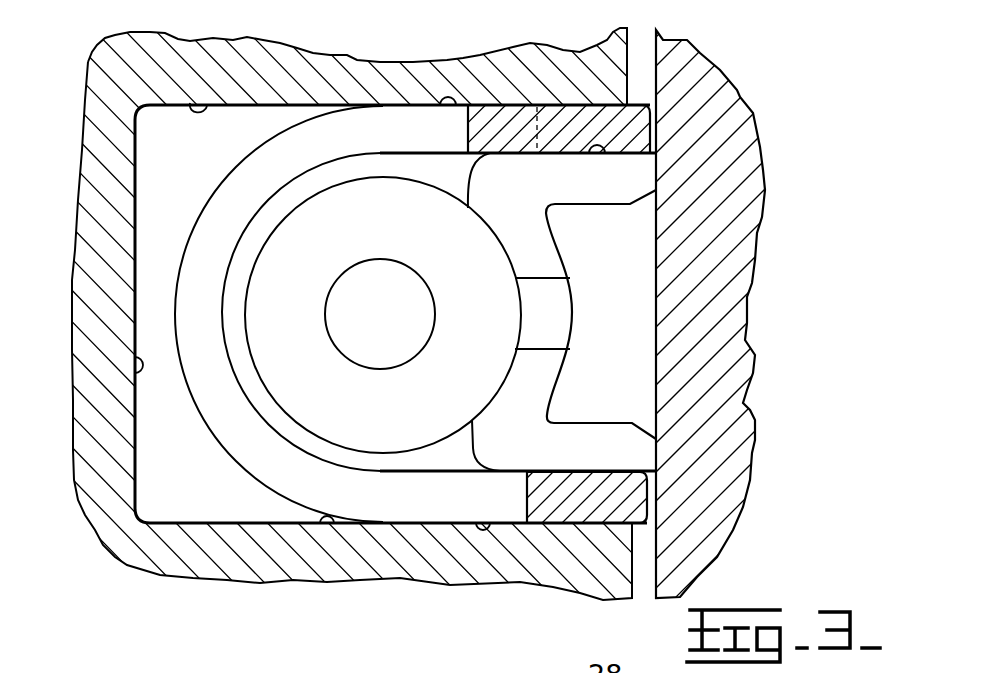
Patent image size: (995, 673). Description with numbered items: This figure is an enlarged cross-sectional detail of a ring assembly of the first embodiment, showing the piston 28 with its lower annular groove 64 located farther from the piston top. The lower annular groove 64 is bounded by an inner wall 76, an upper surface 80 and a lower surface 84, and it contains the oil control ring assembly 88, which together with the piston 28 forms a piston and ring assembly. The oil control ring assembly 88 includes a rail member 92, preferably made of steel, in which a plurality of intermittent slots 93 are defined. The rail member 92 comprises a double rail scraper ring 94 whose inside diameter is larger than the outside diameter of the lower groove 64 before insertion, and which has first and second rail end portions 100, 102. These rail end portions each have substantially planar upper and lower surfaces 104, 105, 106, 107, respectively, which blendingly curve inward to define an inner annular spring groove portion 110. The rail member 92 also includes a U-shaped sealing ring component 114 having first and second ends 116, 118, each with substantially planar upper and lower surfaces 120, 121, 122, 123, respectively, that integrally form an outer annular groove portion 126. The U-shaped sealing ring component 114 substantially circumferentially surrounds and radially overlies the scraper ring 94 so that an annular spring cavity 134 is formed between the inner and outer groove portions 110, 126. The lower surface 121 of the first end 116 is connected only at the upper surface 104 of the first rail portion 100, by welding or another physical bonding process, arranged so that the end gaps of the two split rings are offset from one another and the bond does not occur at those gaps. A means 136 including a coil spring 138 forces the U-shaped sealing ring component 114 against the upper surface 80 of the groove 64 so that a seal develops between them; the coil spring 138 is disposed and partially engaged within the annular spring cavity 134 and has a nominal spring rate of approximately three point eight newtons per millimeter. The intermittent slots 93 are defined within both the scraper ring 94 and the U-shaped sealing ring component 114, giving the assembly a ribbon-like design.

The piston 28 is at (600, 592).
The lower annular groove 64 is at (252, 103).
The inner wall 76 is at (130, 360).
The upper surface 80 is at (190, 103).
The lower surface 84 is at (334, 523).
The oil control ring assembly 88 is at (176, 500).
The rail member 92 is at (625, 115).
The intermittent slots 93 is at (237, 435).
The double rail scraper ring 94 is at (553, 368).
The first rail end portion 100 is at (595, 180).
The second rail end portion 102 is at (582, 440).
The upper surface 104 is at (592, 142).
The lower surface 105 is at (575, 207).
The upper surface 106 is at (567, 427).
The lower surface 107 is at (607, 472).
The inner annular spring groove portion 110 is at (517, 297).
The U-shaped sealing ring component 114 is at (319, 142).
The first end 116 is at (633, 500).
The second end 118 is at (590, 113).
The upper surface 120 is at (457, 472).
The lower surface 121 is at (483, 527).
The upper surface 122 is at (455, 103).
The lower surface 123 is at (447, 153).
The outer annular groove portion 126 is at (228, 372).
The annular spring cavity 134 is at (343, 460).
The means for forcing 136 is at (518, 311).
The coil spring 138 is at (300, 398).